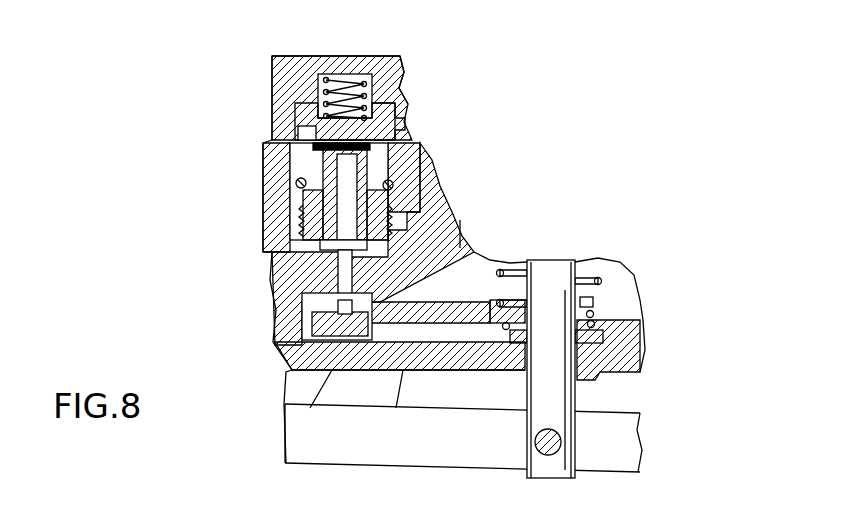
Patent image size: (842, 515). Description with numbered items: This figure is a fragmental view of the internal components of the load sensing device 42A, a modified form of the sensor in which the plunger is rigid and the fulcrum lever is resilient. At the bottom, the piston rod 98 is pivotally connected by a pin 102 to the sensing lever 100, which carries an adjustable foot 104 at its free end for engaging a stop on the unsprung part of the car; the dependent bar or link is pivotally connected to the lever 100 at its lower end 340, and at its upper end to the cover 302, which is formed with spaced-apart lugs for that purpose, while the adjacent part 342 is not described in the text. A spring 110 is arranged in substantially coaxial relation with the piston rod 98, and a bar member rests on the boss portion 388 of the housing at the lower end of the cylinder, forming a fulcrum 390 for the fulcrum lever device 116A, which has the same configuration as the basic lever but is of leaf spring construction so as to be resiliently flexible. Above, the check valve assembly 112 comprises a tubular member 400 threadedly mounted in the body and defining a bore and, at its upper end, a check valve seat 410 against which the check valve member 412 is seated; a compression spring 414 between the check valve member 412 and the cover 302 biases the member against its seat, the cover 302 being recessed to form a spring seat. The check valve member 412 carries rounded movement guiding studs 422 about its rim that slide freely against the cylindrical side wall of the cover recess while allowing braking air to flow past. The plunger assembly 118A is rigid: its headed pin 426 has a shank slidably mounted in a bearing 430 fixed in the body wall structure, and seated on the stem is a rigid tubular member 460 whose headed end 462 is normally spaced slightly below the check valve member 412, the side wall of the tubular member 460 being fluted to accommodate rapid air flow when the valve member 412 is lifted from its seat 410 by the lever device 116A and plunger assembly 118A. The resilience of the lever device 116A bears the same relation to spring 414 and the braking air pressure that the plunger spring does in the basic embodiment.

The lower end 340 is at (240, 70).
The adjustable foot 104 is at (336, 29).
The compression spring 414 is at (338, 90).
The check valve assembly 112 is at (378, 117).
The cover 302 is at (402, 80).
The load sensing device 42A is at (533, 110).
The check valve seat 410 is at (293, 80).
The movement guiding studs 422 is at (297, 125).
The check valve member 412 is at (400, 128).
The headed end 462 is at (317, 148).
The tubular member 400 is at (380, 170).
The rigid tubular member 460 is at (327, 200).
The plunger assembly 118A is at (280, 239).
The spring 110 is at (598, 280).
The headed pin 426 is at (350, 305).
The bearing 430 is at (290, 304).
The fulcrum 390 is at (400, 351).
The piston rod 98 is at (565, 400).
The base edge 342 is at (307, 421).
The fulcrum lever device 116A is at (421, 332).
The boss portion 388 is at (478, 350).
The sensing lever 100 is at (303, 452).
The pin 102 is at (560, 447).